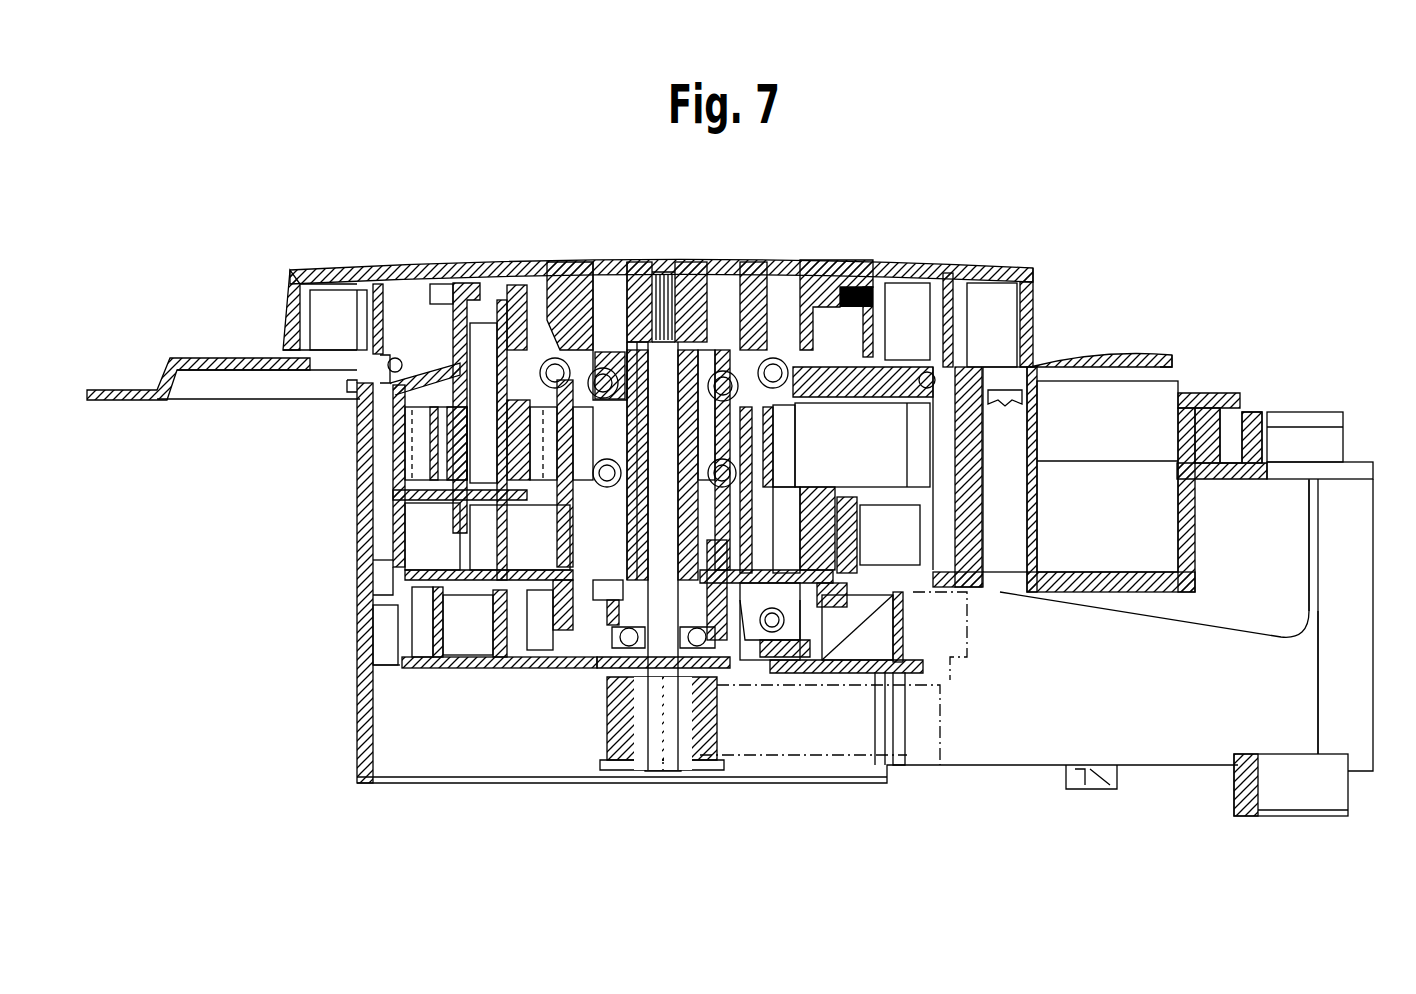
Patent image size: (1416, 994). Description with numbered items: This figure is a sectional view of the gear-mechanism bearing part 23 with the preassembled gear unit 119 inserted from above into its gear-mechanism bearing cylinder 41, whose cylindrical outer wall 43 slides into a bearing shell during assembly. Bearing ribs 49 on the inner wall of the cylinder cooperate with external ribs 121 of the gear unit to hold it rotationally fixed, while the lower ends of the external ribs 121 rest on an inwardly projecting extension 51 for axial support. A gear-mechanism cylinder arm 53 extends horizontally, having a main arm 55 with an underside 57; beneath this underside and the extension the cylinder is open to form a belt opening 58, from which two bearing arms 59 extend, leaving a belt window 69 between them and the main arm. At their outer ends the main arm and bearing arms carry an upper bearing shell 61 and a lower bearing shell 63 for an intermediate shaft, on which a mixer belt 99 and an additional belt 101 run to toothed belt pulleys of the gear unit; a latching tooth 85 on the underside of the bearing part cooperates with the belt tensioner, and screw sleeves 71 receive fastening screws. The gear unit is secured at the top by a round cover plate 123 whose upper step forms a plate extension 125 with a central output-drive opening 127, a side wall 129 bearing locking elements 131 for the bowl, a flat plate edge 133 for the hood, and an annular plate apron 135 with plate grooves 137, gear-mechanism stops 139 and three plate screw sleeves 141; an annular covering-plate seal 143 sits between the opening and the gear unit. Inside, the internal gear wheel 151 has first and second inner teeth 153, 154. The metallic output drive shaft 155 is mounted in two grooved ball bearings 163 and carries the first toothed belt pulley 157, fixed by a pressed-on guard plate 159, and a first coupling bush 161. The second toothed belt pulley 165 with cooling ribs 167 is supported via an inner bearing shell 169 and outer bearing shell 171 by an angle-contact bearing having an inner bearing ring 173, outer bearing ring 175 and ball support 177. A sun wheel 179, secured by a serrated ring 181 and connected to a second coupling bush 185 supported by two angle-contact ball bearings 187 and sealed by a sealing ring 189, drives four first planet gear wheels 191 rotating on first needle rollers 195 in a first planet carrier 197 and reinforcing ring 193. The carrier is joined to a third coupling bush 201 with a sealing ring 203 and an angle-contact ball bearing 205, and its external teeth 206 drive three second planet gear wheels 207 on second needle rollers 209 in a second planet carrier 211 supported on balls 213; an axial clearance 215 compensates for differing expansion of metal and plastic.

The gear-mechanism bearing part 23 is at (1310, 410).
The gear-mechanism bearing cylinder 41 is at (357, 537).
The outer wall 43 is at (356, 625).
The bearing ribs 49 is at (357, 563).
The extension 51 is at (357, 595).
The gear-mechanism cylinder arm 53 is at (1150, 437).
The main arm 55 is at (1162, 592).
The underside 57 is at (1097, 596).
The belt opening 58 is at (1095, 727).
The bearing arms 59 is at (1305, 690).
The upper bearing shell 61 is at (1335, 440).
The lower bearing shell 63 is at (1330, 803).
The belt window 69 is at (1292, 530).
The screw sleeves 71 is at (1020, 388).
The latching tooth 85 is at (1083, 790).
The mixer belt 99 is at (940, 765).
The additional belt 101 is at (962, 683).
The gear unit 119 is at (858, 680).
The external ribs 121 is at (990, 594).
The cover plate 123 is at (948, 268).
The plate extension 125 is at (1040, 352).
The output-drive opening 127 is at (766, 256).
The side wall 129 is at (1035, 325).
The locking elements 131 is at (282, 295).
The plate edge 133 is at (92, 389).
The plate apron 135 is at (1000, 300).
The plate grooves 137 is at (352, 292).
The gear-mechanism stops 139 is at (398, 292).
The plate screw sleeves 141 is at (1015, 310).
The covering-plate seal 143 is at (848, 290).
The internal gear wheel 151 is at (357, 648).
The first inner teeth 153 is at (358, 665).
The second inner teeth 154 is at (397, 506).
The output drive shaft 155 is at (630, 772).
The first toothed belt pulley 157 is at (725, 750).
The guard plate 159 is at (685, 771).
The first coupling bush 161 is at (640, 262).
The grooved ball bearings 163 is at (695, 262).
The second toothed belt pulley 165 is at (805, 715).
The cooling ribs 167 is at (895, 735).
The inner bearing shell 169 is at (805, 660).
The outer bearing shell 171 is at (825, 672).
The inner bearing ring 173 is at (595, 650).
The outer bearing ring 175 is at (500, 650).
The ball support 177 is at (560, 650).
The sun wheel 179 is at (757, 640).
The serrated ring 181 is at (610, 660).
The second coupling bush 185 is at (720, 320).
The angle-contact ball bearings 187 is at (618, 325).
The sealing ring 189 is at (600, 300).
The first planet gear wheels 191 is at (480, 625).
The reinforcing ring 193 is at (530, 625).
The first needle rollers 195 is at (520, 625).
The first planet carrier 197 is at (780, 430).
The third coupling bush 201 is at (475, 418).
The sealing ring 203 is at (492, 305).
The angle-contact ball bearing 205 is at (815, 372).
The external teeth 206 is at (785, 438).
The second planet gear wheels 207 is at (497, 440).
The second needle rollers 209 is at (473, 373).
The second planet carrier 211 is at (455, 292).
The balls 213 is at (387, 380).
The axial clearance 215 is at (607, 690).